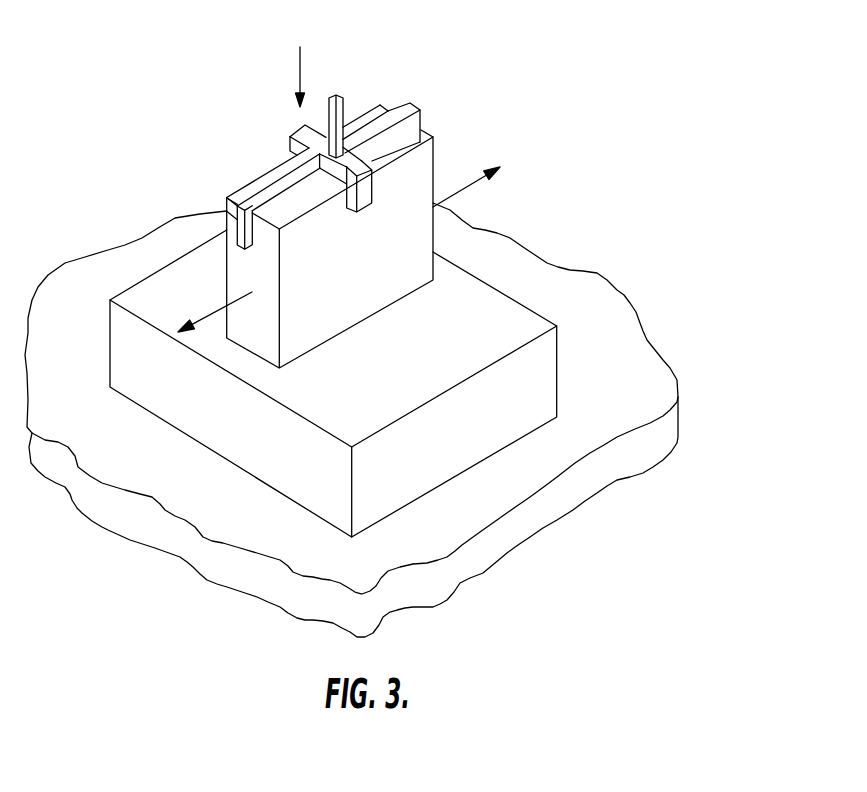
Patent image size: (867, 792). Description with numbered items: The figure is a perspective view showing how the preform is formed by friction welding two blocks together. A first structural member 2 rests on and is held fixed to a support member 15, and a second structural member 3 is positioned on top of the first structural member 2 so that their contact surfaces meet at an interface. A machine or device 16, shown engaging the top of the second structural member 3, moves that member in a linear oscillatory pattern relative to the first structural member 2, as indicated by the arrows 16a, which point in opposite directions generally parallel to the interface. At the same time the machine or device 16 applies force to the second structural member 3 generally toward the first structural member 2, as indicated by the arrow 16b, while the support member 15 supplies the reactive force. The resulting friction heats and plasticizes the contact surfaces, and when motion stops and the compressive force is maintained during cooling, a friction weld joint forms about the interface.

The first structural member 2 is at (138, 282).
The second structural member 3 is at (432, 150).
The support member 15 is at (640, 348).
The machine or device 16 is at (347, 99).
The arrows 16a is at (463, 180).
The arrow 16b is at (297, 73).